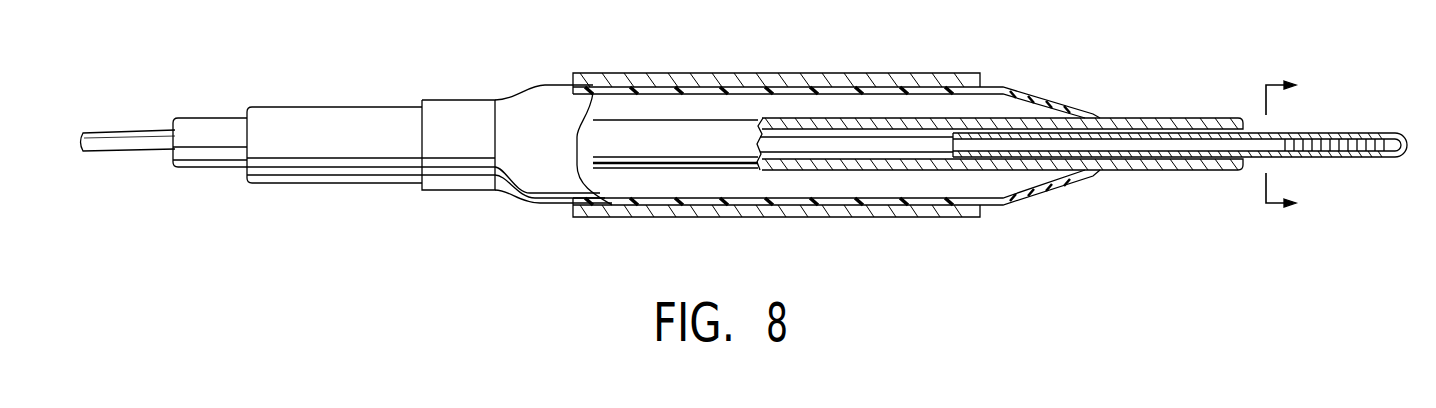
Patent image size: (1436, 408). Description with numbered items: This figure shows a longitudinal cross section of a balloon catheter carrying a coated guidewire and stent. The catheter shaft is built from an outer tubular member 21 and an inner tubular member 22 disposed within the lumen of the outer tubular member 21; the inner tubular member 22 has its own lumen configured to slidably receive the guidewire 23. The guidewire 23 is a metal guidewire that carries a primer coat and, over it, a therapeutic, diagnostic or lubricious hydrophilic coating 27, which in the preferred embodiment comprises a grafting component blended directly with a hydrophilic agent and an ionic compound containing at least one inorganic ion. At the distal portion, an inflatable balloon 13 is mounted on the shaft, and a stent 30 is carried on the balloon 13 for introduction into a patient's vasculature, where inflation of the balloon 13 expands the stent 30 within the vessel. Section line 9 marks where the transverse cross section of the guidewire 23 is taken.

The inflatable balloon 13 is at (763, 84).
The outer tubular member 21 is at (370, 107).
The inner tubular member 22 is at (224, 168).
The guidewire 23 is at (135, 152).
The hydrophilic coating 27 is at (1358, 158).
The stent 30 is at (882, 78).
The section line 9— 9 is at (1292, 146).